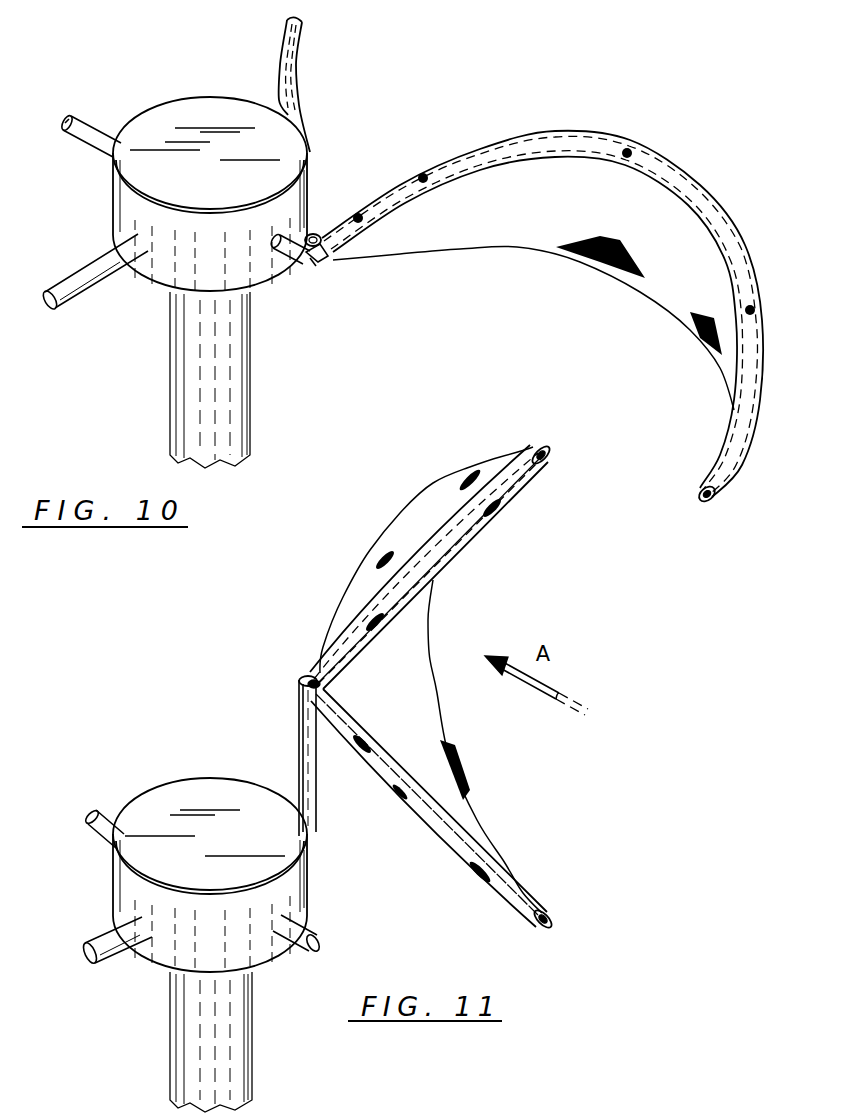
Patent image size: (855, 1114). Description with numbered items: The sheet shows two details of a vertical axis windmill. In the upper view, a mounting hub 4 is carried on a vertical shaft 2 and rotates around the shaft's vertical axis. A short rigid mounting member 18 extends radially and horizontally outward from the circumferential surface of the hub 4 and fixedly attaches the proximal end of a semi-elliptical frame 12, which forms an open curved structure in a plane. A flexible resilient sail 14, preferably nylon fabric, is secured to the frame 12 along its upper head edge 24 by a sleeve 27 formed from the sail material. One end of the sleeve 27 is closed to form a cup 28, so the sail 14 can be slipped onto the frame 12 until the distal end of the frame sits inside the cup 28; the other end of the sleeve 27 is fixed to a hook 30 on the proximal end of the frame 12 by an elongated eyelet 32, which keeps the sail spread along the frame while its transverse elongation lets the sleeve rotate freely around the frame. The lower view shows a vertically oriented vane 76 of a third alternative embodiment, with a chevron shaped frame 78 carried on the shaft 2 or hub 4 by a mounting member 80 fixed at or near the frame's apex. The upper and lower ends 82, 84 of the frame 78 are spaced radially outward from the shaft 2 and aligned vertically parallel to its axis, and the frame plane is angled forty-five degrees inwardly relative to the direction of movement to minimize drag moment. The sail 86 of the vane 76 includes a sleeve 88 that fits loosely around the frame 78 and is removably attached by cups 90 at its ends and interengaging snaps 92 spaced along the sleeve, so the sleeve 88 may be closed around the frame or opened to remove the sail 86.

In FIG. 10, the vertical shaft 2 is at (240, 402).
In FIG. 11, the vertical shaft 2 is at (237, 1050).
In FIG. 10, the mounting hub 4 is at (183, 108).
In FIG. 11, the mounting hub 4 is at (160, 800).
In FIG. 10, the frame 12 is at (542, 314).
In FIG. 10, the sail 14 is at (517, 243).
In FIG. 10, the mounting member 18 is at (298, 268).
In FIG. 10, the head edge 24 is at (527, 173).
In FIG. 10, the sleeve 27 is at (652, 145).
In FIG. 10, the cup 28 is at (710, 503).
In FIG. 10, the hook 30 is at (317, 232).
In FIG. 10, the eyelet 32 is at (325, 262).
In FIG. 11, the vertically oriented vane 76 is at (457, 809).
In FIG. 11, the chevron shaped frame 78 is at (455, 566).
In FIG. 11, the mounting member 80 is at (300, 736).
In FIG. 11, the upper end 82 is at (548, 452).
In FIG. 11, the lower end 84 is at (545, 908).
In FIG. 11, the sail 86 is at (427, 730).
In FIG. 11, the sleeve 88 is at (460, 540).
In FIG. 11, the cups 90 is at (537, 443).
In FIG. 11, the snaps 92 is at (463, 505).